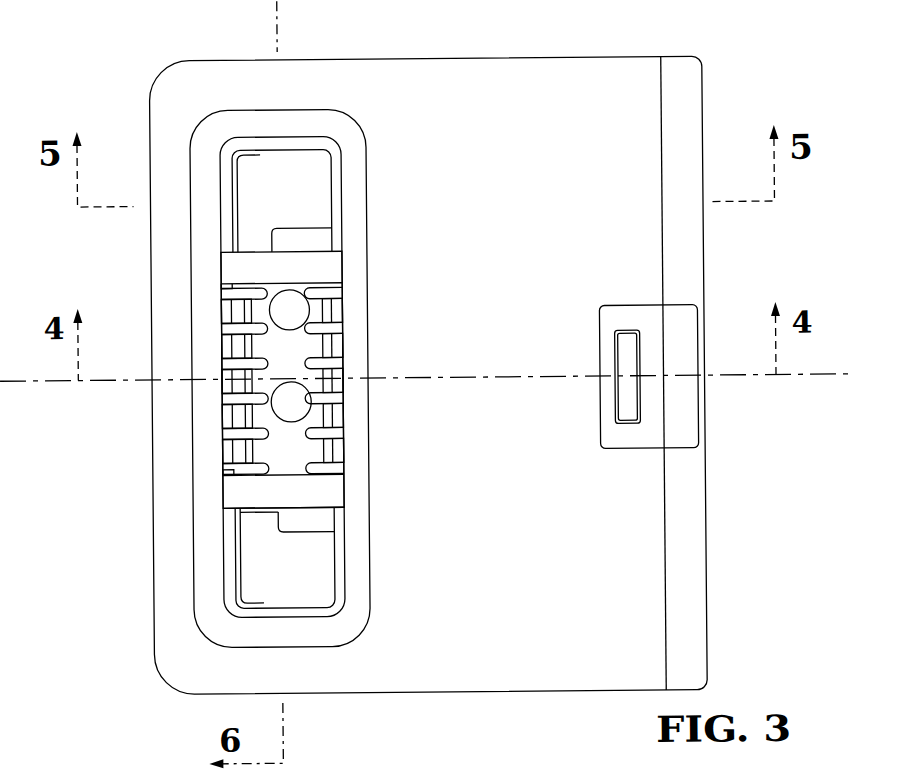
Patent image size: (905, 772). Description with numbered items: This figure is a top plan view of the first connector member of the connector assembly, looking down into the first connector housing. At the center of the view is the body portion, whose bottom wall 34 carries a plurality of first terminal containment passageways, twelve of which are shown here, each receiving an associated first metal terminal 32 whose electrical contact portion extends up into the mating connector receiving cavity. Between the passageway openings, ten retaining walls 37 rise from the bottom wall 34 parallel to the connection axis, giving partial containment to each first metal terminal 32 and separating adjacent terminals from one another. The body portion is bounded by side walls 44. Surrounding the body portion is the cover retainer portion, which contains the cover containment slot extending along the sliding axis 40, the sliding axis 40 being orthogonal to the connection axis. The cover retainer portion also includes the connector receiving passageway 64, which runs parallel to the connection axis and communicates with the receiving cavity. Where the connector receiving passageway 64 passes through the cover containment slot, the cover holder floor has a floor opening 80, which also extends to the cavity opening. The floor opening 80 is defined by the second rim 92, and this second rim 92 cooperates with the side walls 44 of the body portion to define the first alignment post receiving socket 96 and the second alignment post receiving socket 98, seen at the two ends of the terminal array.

The first metal terminal 32 is at (332, 324).
The bottom wall 34 is at (278, 347).
The retaining wall 37 is at (332, 344).
The sliding axis 40 is at (840, 378).
The side wall 44 is at (259, 508).
The connector receiving passageway 64 is at (241, 582).
The floor opening 80 is at (339, 171).
The second rim 92 is at (324, 141).
The first alignment post receiving socket 96 is at (285, 167).
The second alignment post receiving socket 98 is at (293, 579).